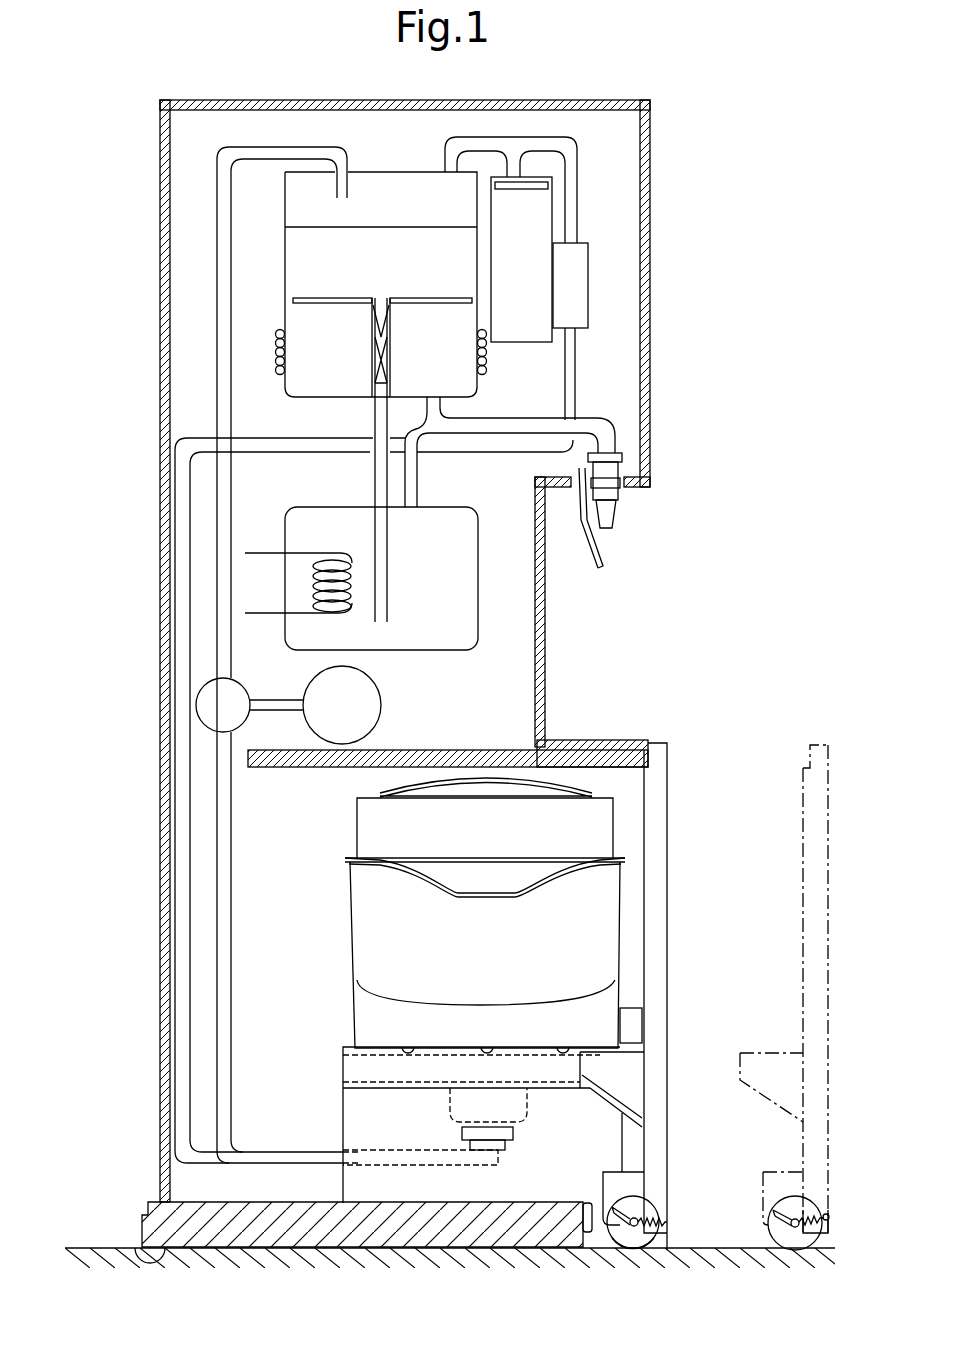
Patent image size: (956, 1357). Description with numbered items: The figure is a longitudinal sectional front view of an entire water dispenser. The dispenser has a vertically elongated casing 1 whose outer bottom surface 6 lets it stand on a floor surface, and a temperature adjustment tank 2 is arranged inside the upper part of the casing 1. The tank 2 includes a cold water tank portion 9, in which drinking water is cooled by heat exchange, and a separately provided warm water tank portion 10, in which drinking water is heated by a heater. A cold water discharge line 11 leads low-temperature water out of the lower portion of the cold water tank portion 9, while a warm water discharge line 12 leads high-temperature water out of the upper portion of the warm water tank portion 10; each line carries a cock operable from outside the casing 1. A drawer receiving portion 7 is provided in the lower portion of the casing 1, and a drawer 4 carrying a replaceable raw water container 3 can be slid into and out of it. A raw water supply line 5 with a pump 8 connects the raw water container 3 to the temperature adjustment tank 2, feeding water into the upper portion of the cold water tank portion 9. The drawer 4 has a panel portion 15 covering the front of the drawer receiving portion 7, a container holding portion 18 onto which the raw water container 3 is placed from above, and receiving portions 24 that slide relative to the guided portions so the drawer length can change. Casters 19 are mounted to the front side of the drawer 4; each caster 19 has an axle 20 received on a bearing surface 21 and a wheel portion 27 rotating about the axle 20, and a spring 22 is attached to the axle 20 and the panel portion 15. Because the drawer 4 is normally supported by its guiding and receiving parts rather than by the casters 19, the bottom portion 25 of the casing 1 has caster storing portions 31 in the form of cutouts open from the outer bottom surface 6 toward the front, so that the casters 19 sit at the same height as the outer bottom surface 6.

The casing 1 is at (652, 210).
The temperature adjustment tank 2 is at (396, 170).
The raw water container 3 is at (620, 843).
The drawer 4 is at (674, 982).
The raw water supply line 5 is at (222, 828).
The outer bottom surface 6 is at (134, 1243).
The drawer receiving portion 7 is at (613, 777).
The pump 8 is at (210, 698).
The cold water tank portion 9 is at (310, 262).
The warm water tank portion 10 is at (293, 521).
The cold water discharge line 11 is at (433, 407).
The warm water discharge line 12 is at (500, 489).
The panel portion 15 is at (666, 1076).
The container holding portion 18 is at (616, 929).
The caster 19 is at (668, 1252).
The axle 20 is at (641, 1205).
The bearing surface 21 is at (605, 1182).
The spring 22 is at (668, 1222).
The receiving portion 24 is at (358, 1069).
The bottom portion 25 is at (367, 1228).
The wheel portion 27 is at (633, 1248).
The caster storing portion 31 is at (590, 1232).